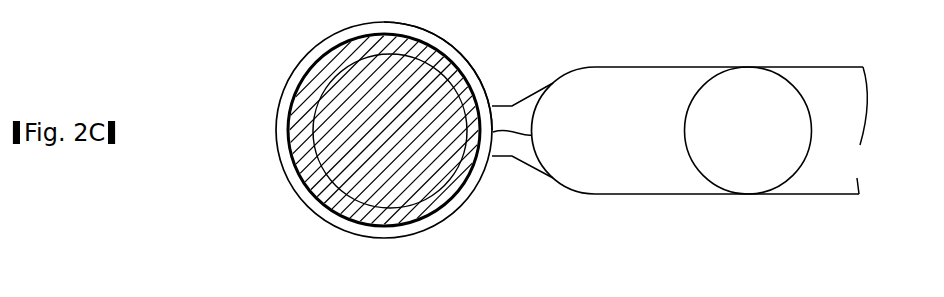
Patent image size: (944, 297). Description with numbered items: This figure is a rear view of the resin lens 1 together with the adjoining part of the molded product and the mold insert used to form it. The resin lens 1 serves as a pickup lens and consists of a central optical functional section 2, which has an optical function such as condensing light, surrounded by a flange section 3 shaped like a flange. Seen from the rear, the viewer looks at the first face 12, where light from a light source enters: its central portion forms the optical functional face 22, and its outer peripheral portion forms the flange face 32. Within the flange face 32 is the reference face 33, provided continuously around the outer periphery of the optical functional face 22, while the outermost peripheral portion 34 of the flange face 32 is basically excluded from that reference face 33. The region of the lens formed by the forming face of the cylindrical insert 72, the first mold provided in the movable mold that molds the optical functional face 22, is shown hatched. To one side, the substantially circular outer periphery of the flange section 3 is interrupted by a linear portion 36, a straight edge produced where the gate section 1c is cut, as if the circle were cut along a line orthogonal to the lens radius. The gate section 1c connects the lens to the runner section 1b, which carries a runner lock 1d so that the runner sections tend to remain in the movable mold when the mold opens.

The resin lens 1 is at (367, 210).
The runner section 1b is at (835, 75).
The gate section 1c is at (518, 111).
The runner lock 1d is at (748, 185).
The optical functional section 2 is at (373, 97).
The flange section 3 is at (303, 148).
The first face 12 is at (441, 200).
The optical functional face 22 is at (400, 197).
The flange face 32 is at (313, 207).
The reference face 33 is at (464, 60).
The outermost peripheral portion 34 is at (479, 192).
The linear portion 36 is at (542, 137).
The cylindrical insert 72 is at (308, 177).